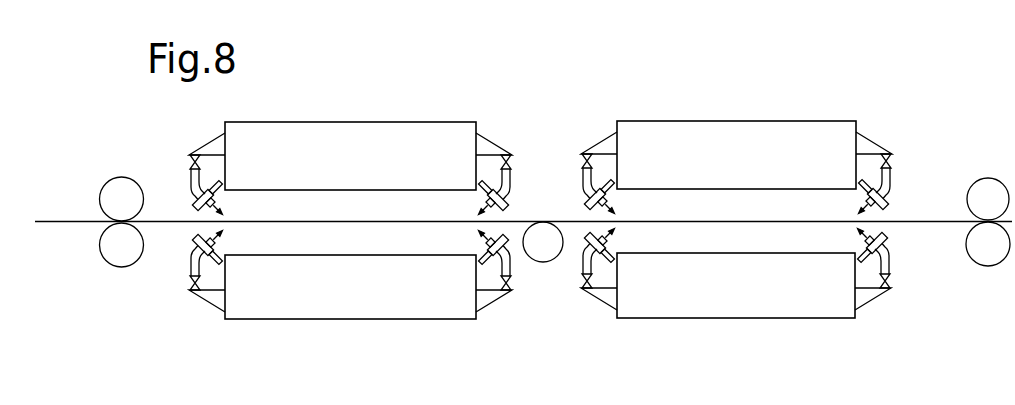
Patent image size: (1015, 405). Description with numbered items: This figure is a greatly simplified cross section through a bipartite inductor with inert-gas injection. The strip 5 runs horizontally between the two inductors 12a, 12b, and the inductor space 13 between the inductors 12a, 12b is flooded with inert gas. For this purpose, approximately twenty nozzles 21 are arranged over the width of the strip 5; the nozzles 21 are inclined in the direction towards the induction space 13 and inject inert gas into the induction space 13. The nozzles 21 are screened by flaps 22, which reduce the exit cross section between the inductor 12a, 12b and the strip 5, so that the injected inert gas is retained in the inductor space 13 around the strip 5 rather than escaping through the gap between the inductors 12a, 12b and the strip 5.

The strip 5 is at (75, 225).
The inductor 12a is at (353, 140).
The inductor 12b is at (770, 137).
The inductor space 13 is at (350, 242).
The nozzles 21 is at (185, 288).
The flaps 22 is at (502, 252).